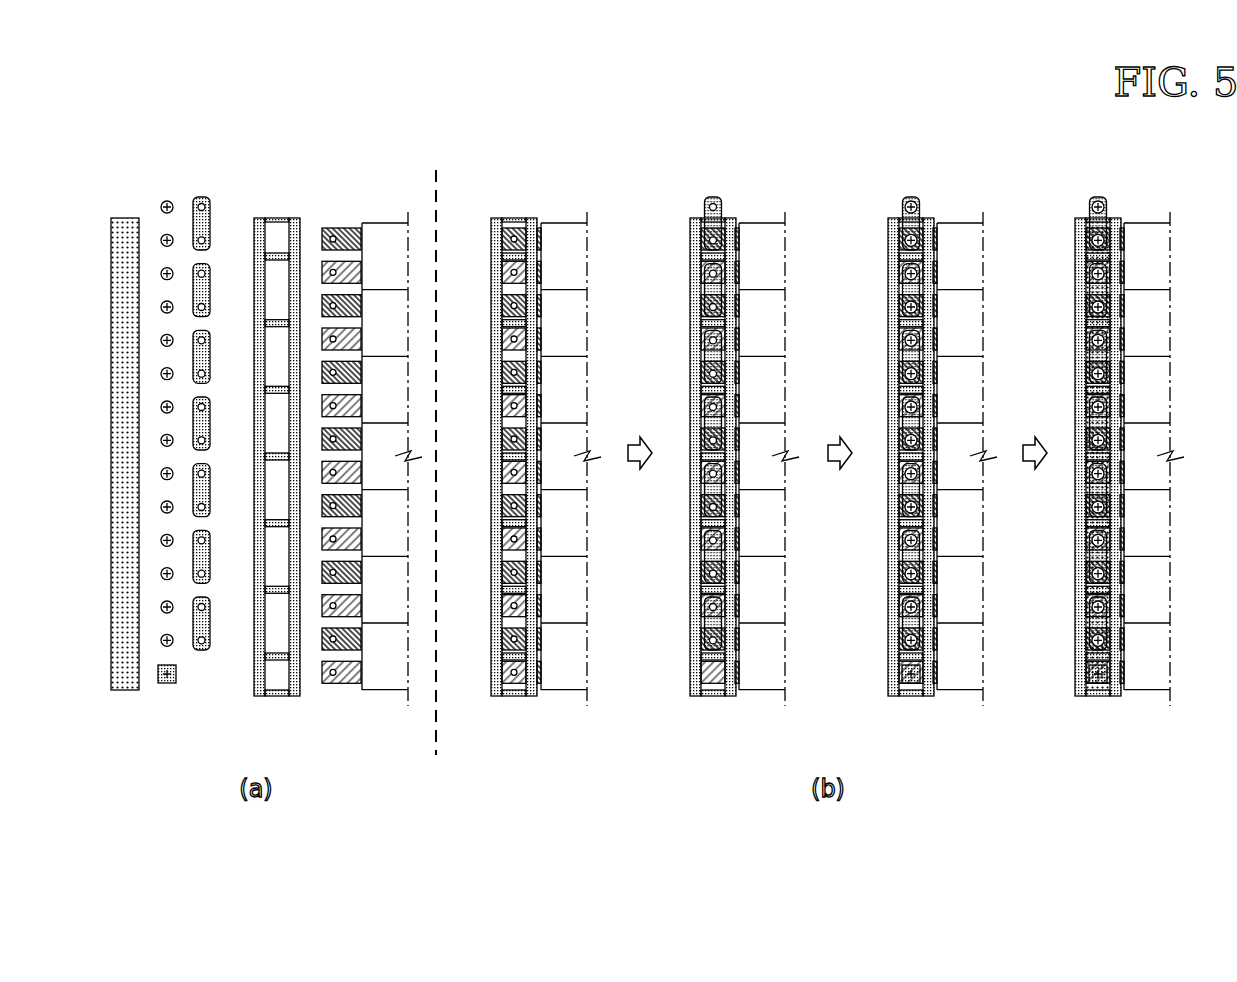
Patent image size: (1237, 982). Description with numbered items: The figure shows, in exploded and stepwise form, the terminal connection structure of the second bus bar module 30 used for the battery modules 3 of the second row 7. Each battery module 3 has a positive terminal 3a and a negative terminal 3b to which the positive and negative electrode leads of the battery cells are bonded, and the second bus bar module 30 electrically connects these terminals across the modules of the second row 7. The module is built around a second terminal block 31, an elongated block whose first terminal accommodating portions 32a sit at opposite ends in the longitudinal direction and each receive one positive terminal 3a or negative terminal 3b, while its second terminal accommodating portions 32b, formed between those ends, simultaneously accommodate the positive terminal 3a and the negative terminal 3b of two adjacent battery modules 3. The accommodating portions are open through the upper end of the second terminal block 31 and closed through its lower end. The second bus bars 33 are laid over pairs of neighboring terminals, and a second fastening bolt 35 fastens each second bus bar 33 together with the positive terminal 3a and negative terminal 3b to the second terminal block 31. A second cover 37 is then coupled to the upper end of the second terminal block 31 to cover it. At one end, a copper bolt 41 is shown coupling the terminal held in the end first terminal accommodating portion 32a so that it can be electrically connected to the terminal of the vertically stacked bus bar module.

The second bus bar module 30 is at (637, 111).
The second terminal block 31 is at (718, 438).
The first terminal accommodating portions 32a is at (287, 226).
The second terminal accommodating portions 32b is at (270, 263).
The second bus bars 33 is at (194, 277).
The second fastening bolt 35 is at (163, 236).
The second cover 37 is at (126, 692).
The copper bolt 41 is at (166, 685).
The battery module 3 is at (386, 228).
The positive terminal 3a is at (328, 270).
The negative terminal 3b is at (341, 236).
The second row 7 is at (380, 700).